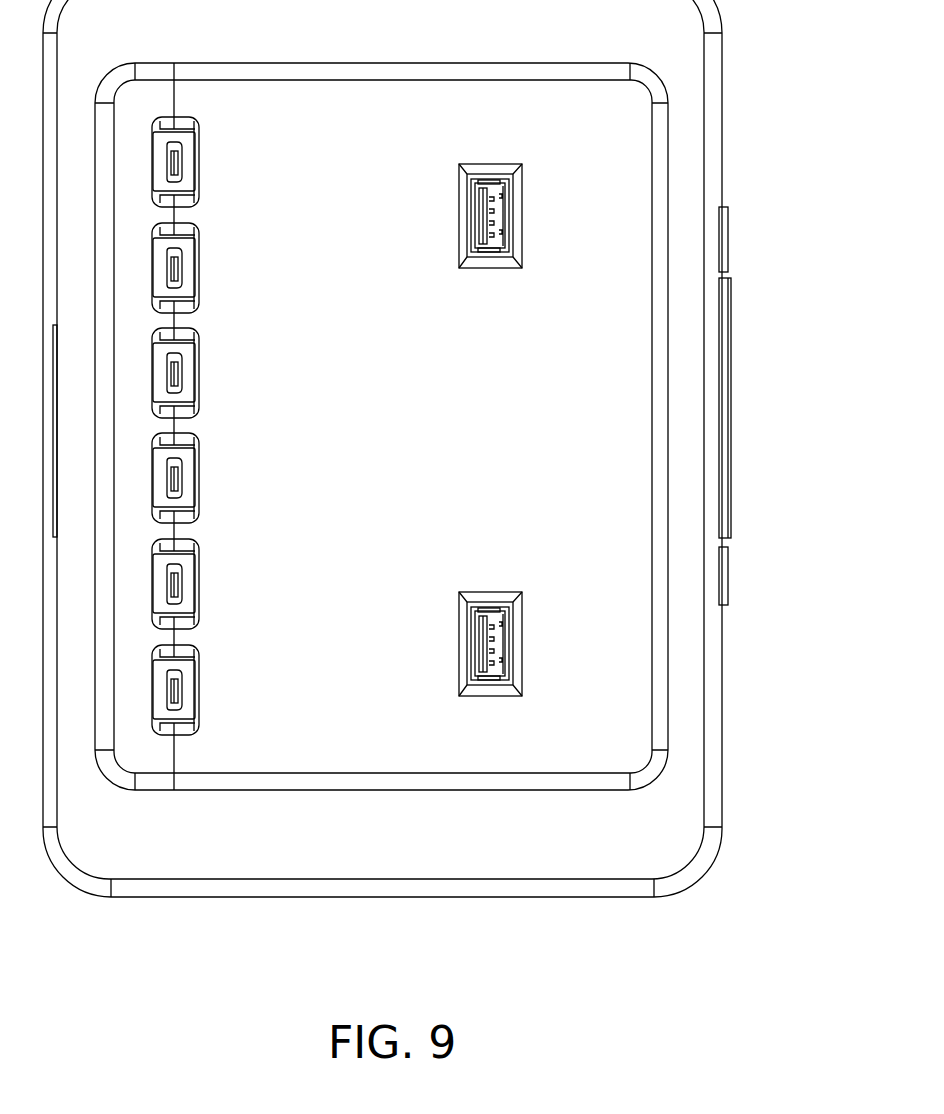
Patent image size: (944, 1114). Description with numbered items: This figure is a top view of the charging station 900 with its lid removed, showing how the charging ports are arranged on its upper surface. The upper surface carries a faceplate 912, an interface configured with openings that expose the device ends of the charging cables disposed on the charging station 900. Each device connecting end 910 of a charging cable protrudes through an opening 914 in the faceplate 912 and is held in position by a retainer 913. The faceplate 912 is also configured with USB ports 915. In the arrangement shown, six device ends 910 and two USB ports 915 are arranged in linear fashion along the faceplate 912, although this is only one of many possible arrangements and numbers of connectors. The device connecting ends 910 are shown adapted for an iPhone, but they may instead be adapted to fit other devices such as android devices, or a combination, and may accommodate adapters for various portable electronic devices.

The charging station 900 is at (675, 814).
The faceplate 912 is at (628, 129).
The opening 914 is at (190, 120).
The USB port 915 is at (495, 211).
The retainer 913 is at (184, 185).
The device connecting end 910 is at (178, 163).